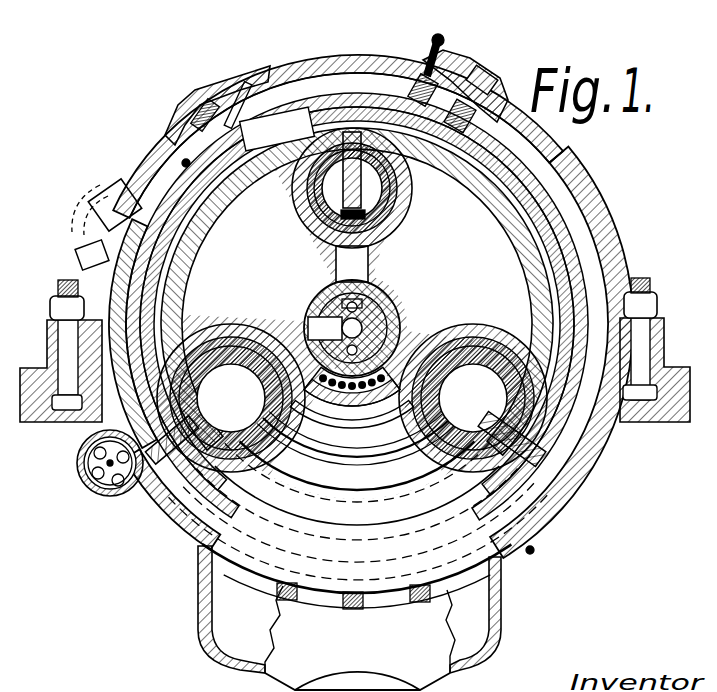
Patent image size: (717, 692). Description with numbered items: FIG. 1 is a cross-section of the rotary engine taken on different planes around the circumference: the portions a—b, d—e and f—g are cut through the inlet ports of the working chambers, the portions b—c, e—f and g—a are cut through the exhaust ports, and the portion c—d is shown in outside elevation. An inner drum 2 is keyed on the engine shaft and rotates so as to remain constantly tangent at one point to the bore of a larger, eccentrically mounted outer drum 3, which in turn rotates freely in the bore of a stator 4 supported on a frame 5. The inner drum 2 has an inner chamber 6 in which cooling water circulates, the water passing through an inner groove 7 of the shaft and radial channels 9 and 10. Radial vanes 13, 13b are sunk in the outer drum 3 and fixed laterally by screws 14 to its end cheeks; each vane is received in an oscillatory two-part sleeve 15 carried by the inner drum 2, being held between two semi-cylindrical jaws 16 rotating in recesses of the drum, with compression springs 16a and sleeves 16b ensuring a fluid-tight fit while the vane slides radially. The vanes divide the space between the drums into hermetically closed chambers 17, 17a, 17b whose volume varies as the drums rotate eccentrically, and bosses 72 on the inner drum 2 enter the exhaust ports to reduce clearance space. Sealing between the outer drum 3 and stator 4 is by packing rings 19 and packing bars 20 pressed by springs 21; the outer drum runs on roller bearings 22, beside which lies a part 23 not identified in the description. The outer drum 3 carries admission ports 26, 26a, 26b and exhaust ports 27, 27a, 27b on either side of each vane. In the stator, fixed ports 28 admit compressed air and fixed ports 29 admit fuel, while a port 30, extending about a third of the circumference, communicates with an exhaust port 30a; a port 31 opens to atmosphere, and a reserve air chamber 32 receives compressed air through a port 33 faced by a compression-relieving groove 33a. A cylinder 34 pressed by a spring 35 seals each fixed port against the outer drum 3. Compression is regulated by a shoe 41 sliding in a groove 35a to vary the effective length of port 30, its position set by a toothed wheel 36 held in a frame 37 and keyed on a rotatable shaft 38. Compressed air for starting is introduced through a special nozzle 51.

The inner drum 2 is at (578, 232).
The outer drum 3 is at (560, 218).
The stator 4 is at (92, 395).
The frame 5 is at (47, 347).
The inner chamber 6 is at (418, 288).
The inner groove 7 is at (325, 316).
The radial channel 9 is at (312, 324).
The radial channel 10 is at (448, 22).
The inner radial vane 13 is at (362, 200).
The inner radial vane 13b is at (540, 450).
The screws 14 is at (262, 460).
The radial pivotal joint or oscillatory two-part sleeve 15 is at (500, 422).
The semi-cylindrical jaws 16 is at (329, 183).
The compression springs 16a is at (400, 236).
The sleeves 16b is at (410, 200).
The chamber 17 is at (160, 278).
The chamber 17a is at (560, 290).
The chamber 17b is at (478, 585).
The packing rings 19 is at (565, 252).
The packing bars 20 is at (183, 163).
The springs 21 is at (190, 150).
The roller bearings 22 is at (330, 407).
The ball row 23 is at (360, 402).
The admission port 26 is at (266, 118).
The admission port 26a is at (585, 400).
The admission port 26b is at (160, 520).
The exhaust port 27 is at (192, 330).
The exhaust port 27a is at (368, 72).
The exhaust port 27b is at (545, 500).
The fixed ports for admission of compressed air 28 is at (395, 68).
The fixed ports for admission of fuel 29 is at (497, 102).
The port 30 is at (500, 577).
The exhaust port 30a is at (491, 630).
The port communicating with the atmosphere 31 is at (85, 260).
The reserve chamber for air 32 is at (300, 80).
The port for the inlet of compressed air 33 is at (208, 100).
The compression-relieving groove 33a is at (280, 190).
The cylinder 34 is at (236, 90).
The spring 35 is at (196, 112).
The groove 35a is at (135, 528).
The toothed wheel 36 is at (108, 497).
The frame 37 is at (84, 474).
The shaft 38 is at (79, 452).
The throttle or shoe 41 is at (185, 540).
The special nozzle 51 is at (441, 47).
The bosses 72 is at (178, 392).
The section boundary point a is at (240, 52).
The section boundary point b is at (615, 219).
The section boundary point c is at (437, 640).
The section boundary point d is at (190, 578).
The section boundary point e is at (86, 489).
The section boundary point f is at (80, 283).
The section boundary point g is at (75, 200).